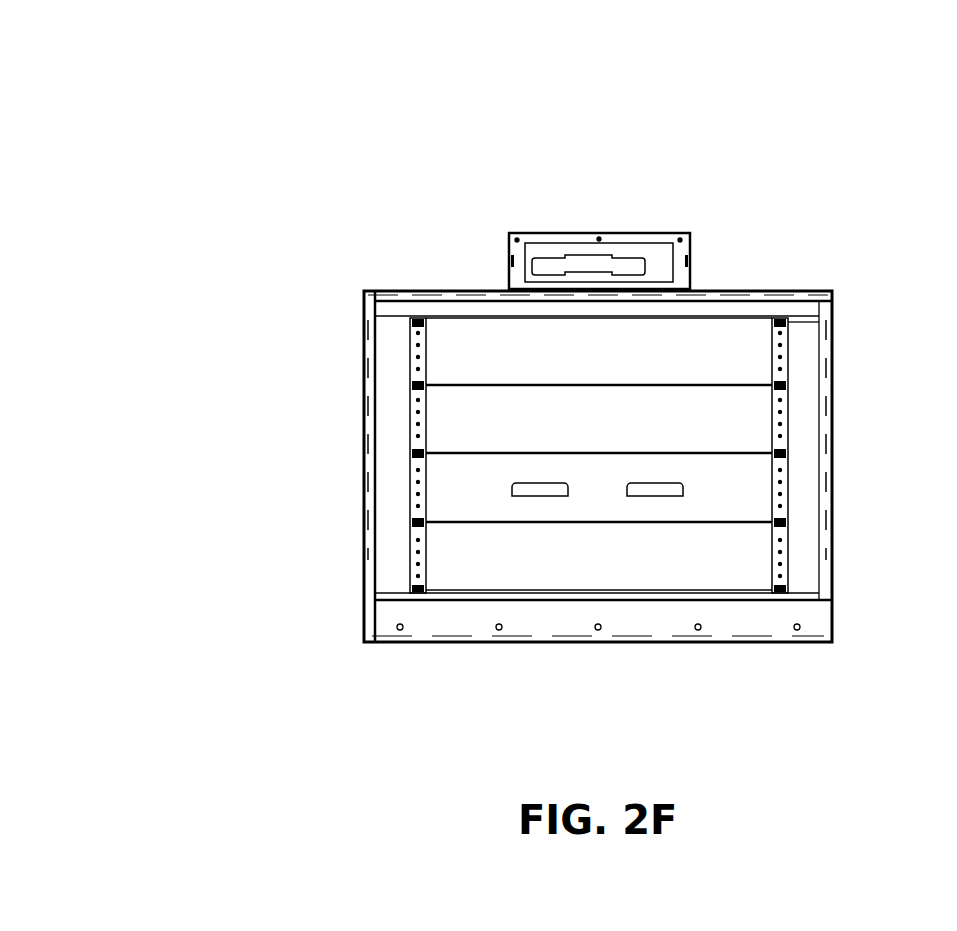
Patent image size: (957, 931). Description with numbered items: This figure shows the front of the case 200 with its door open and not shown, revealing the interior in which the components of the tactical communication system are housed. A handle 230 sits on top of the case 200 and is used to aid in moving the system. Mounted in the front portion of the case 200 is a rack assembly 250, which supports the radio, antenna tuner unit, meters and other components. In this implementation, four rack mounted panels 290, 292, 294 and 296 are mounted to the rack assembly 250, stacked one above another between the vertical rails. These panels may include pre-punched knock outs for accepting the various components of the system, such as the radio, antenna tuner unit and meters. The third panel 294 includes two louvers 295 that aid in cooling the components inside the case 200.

The case 200 is at (305, 141).
The handle 230 is at (644, 232).
The rack assembly 250 is at (405, 568).
The rack mounted panel 290 is at (441, 354).
The rack mounted panel 292 is at (441, 417).
The rack mounted panel 294 is at (441, 486).
The rack mounted panel 296 is at (441, 540).
The louver 295 is at (652, 490).